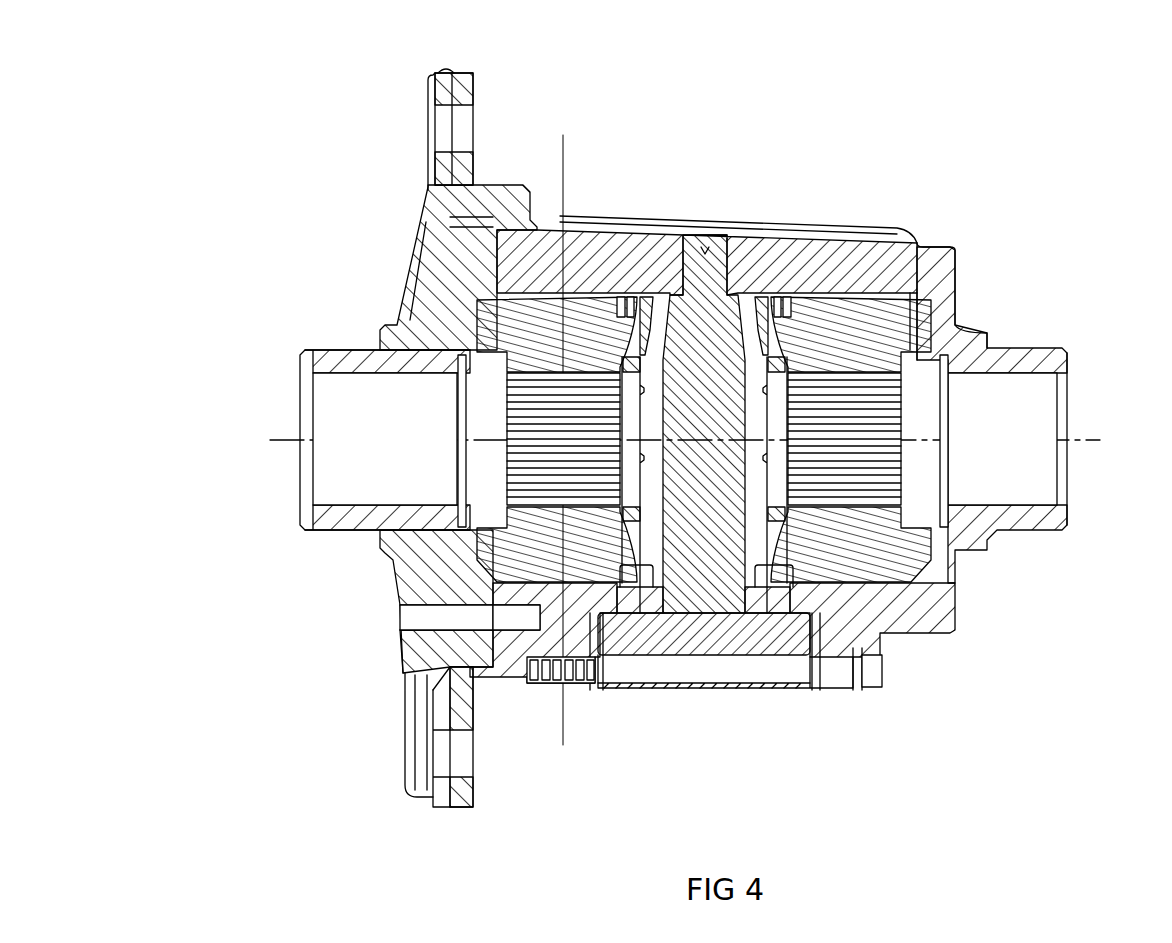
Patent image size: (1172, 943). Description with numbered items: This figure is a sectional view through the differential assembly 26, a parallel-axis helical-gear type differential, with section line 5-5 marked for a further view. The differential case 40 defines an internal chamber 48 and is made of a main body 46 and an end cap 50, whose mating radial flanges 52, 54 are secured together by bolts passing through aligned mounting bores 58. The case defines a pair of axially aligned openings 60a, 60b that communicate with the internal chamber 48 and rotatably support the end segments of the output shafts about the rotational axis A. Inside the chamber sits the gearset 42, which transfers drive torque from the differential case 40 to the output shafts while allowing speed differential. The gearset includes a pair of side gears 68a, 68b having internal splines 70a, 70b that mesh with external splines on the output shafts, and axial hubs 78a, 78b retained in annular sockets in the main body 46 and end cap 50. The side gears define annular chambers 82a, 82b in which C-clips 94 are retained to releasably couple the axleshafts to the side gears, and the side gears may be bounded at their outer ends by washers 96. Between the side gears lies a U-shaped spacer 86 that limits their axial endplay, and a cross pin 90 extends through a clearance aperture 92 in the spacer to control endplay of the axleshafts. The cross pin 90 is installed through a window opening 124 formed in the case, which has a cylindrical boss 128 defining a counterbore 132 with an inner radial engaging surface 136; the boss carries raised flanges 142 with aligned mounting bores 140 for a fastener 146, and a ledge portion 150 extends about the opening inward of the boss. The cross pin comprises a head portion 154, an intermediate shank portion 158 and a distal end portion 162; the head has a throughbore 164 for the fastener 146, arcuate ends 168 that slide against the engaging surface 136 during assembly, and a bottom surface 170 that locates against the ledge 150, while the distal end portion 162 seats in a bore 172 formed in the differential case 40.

The section line 5- 5 is at (563, 135).
The differential assembly 26 is at (948, 800).
The differential case 40 is at (927, 610).
The gearset 42 is at (965, 198).
The main body 46 is at (857, 268).
The internal chamber 48 is at (880, 575).
The end cap 50 is at (445, 248).
The radial flange 52 is at (470, 797).
The radial flange 54 is at (437, 795).
The mounting bores 58 is at (470, 115).
The axially aligned opening 60a is at (1017, 503).
The axially aligned opening 60b is at (353, 505).
The side gear 68a is at (862, 348).
The side gear 68b is at (554, 348).
The internal splines 70a is at (848, 487).
The internal splines 70b is at (540, 487).
The axial hub 78a is at (950, 332).
The axial hub 78b is at (490, 347).
The annular chamber 82a is at (768, 365).
The annular chamber 82b is at (640, 365).
The spacer 86 is at (648, 300).
The cross pin 90 is at (728, 600).
The clearance aperture 92 is at (747, 330).
The C-clips 94 is at (605, 348).
The washers 96 is at (916, 312).
The window opening 124 is at (670, 695).
The cylindrical boss 128 is at (634, 690).
The counterbore 132 is at (630, 580).
The inner radial engaging surface 136 is at (592, 567).
The mounting bores 140 is at (845, 672).
The raised flanges 142 is at (578, 638).
The fastener 146 is at (875, 672).
The ledge portion 150 is at (800, 590).
The head portion 154 is at (725, 637).
The shank portion 158 is at (693, 397).
The distal end portion 162 is at (706, 265).
The throughbore 164 is at (698, 667).
The arcuate ends 168 is at (814, 625).
The bottom surface 170 is at (648, 610).
The bore 172 is at (695, 250).
The rotational axis A is at (270, 438).